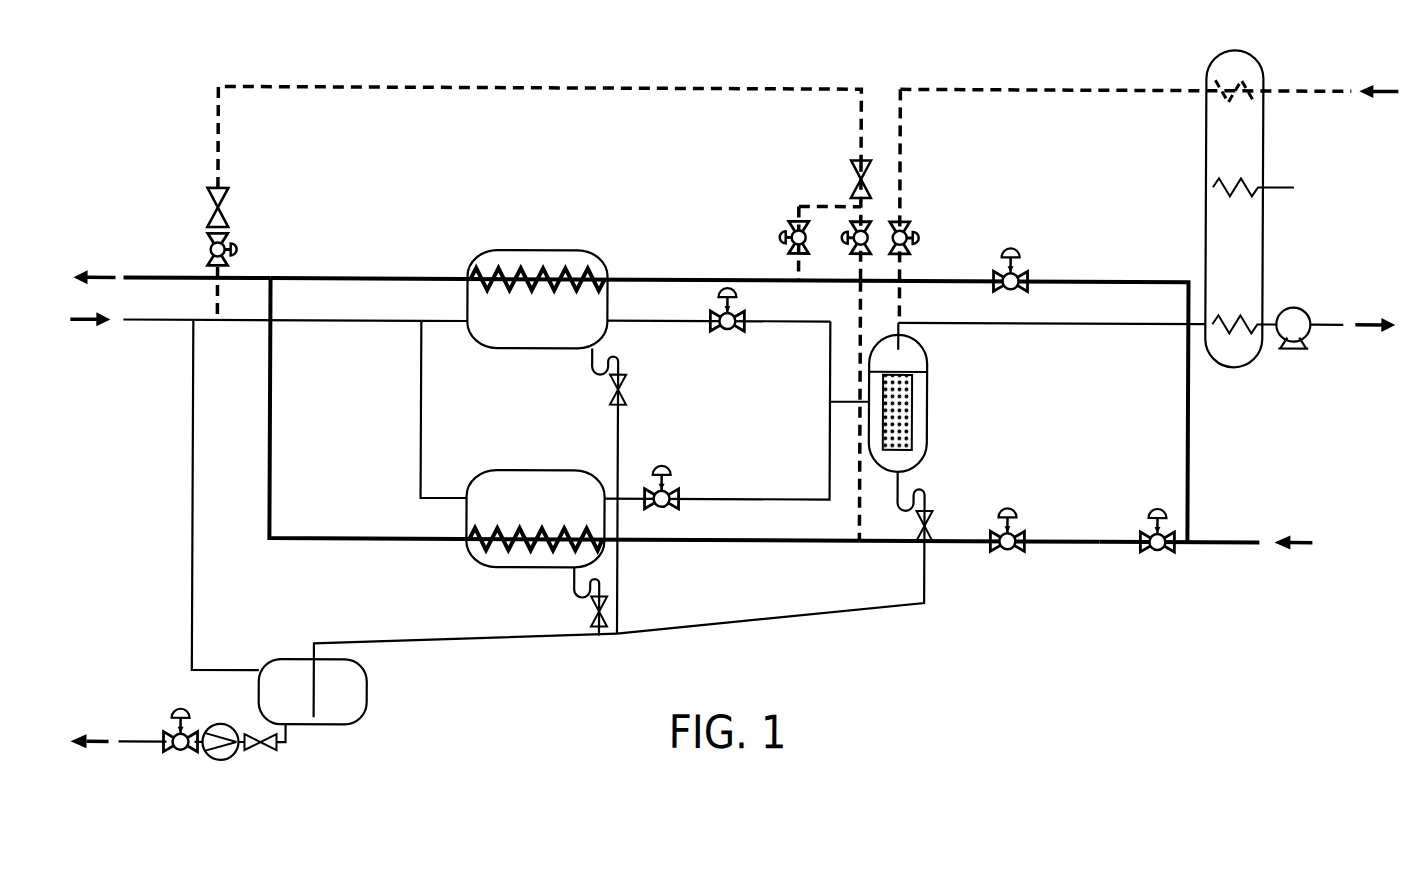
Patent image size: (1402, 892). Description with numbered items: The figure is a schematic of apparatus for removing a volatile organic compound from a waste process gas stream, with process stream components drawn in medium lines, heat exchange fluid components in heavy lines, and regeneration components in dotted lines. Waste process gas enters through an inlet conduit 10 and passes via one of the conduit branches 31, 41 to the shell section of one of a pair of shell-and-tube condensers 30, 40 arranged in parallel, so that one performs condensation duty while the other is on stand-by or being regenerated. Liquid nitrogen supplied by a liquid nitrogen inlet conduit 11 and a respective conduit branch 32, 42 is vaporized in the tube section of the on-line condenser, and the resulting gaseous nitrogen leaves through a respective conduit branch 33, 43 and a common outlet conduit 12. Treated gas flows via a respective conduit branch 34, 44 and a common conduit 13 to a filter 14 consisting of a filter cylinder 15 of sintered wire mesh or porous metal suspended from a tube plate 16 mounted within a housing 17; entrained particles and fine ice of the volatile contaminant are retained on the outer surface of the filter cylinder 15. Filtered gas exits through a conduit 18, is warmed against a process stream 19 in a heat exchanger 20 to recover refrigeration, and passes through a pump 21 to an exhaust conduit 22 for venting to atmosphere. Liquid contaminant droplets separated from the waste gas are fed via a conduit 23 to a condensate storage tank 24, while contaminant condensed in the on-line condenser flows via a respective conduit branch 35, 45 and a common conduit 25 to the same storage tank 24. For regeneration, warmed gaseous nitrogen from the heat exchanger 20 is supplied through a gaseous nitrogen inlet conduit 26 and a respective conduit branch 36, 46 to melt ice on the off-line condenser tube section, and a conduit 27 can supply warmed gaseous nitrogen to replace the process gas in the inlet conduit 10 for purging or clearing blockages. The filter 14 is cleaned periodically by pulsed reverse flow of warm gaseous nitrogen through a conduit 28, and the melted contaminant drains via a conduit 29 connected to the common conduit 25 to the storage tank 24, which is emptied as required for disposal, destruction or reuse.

The inlet conduit 10 is at (342, 322).
The LIN inlet conduit 11 is at (1232, 540).
The common outlet conduit 12 is at (168, 280).
The common conduit 13 is at (838, 401).
The filter 14 is at (937, 391).
The filter cylinder 15 is at (905, 432).
The tube plate 16 is at (922, 371).
The housing 17 is at (922, 467).
The conduit 18 is at (1110, 325).
The process stream 19 is at (1290, 185).
The heat exchanger 20 is at (1205, 139).
The pump 21 is at (1293, 305).
The exhaust conduit 22 is at (1335, 322).
The conduit 23 is at (193, 470).
The VOC condensate storage tank 24 is at (370, 688).
The common conduit 25 is at (405, 642).
The GAN inlet conduit 26 is at (1048, 88).
The conduit 27 is at (549, 88).
The conduit 28 is at (900, 144).
The conduit 29 is at (858, 612).
The shell-and-tube condenser 30 is at (572, 251).
The conduit branch 31 is at (450, 322).
The conduit branch 32 is at (1107, 280).
The conduit branch 33 is at (382, 280).
The conduit branch 34 is at (680, 322).
The conduit branch 35 is at (620, 423).
The conduit branch 36 is at (808, 205).
The shell-and-tube condenser 40 is at (500, 471).
The conduit branch 41 is at (421, 400).
The conduit branch 42 is at (1073, 540).
The conduit branch 43 is at (328, 540).
The conduit branch 44 is at (773, 499).
The conduit branch 45 is at (575, 597).
The conduit branch 46 is at (857, 522).